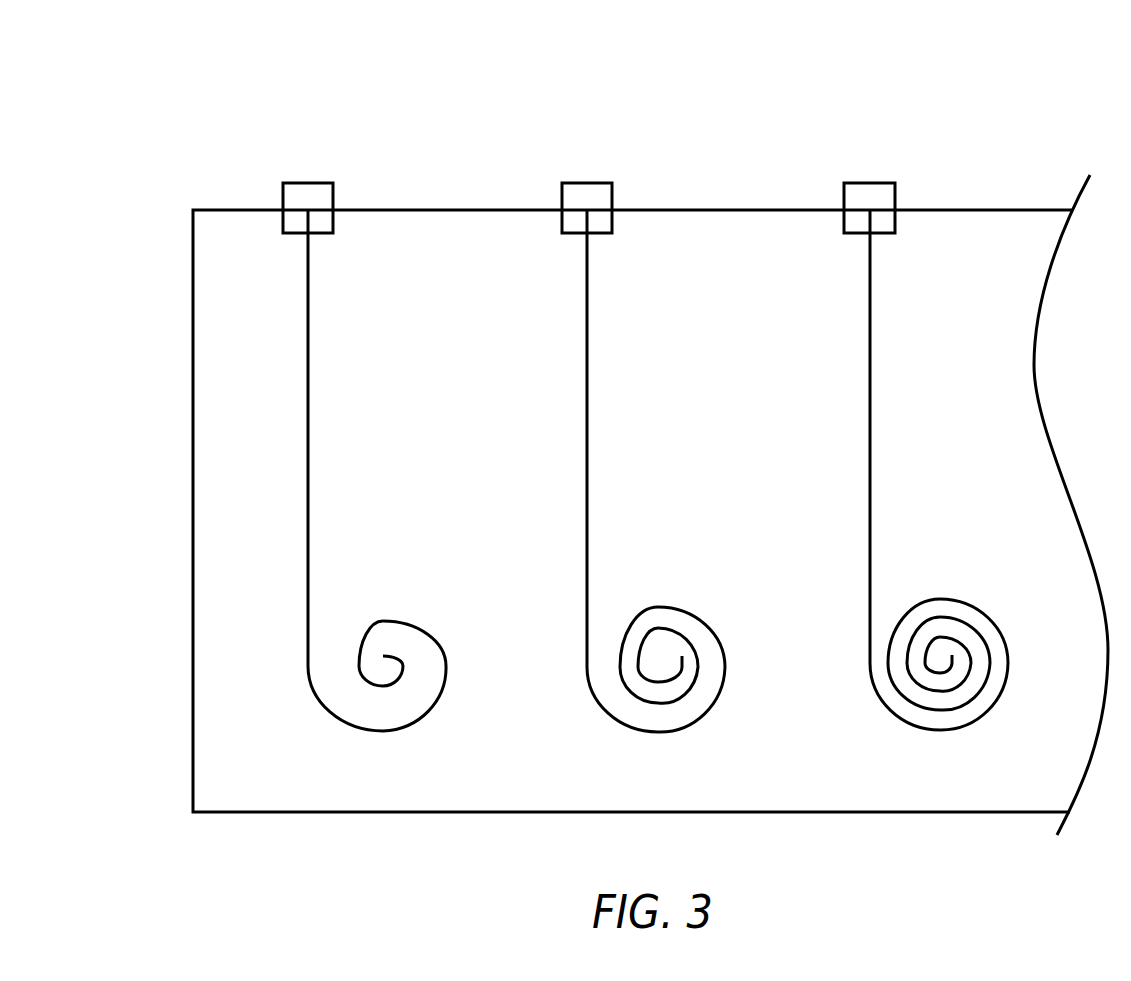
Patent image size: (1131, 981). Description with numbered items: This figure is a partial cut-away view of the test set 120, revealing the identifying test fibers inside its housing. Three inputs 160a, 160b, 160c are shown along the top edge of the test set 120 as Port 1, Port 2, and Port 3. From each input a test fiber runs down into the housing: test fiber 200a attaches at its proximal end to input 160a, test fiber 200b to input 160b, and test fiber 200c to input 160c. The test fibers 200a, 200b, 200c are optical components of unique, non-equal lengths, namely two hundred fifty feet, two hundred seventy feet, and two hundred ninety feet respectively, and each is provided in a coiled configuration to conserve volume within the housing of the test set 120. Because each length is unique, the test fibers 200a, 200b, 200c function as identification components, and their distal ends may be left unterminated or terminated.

The test set 120 is at (192, 271).
The input 160a is at (308, 133).
The input 160b is at (578, 135).
The input 160c is at (866, 140).
The test fiber 200a is at (310, 343).
The test fiber 200b is at (588, 340).
The test fiber 200c is at (870, 340).